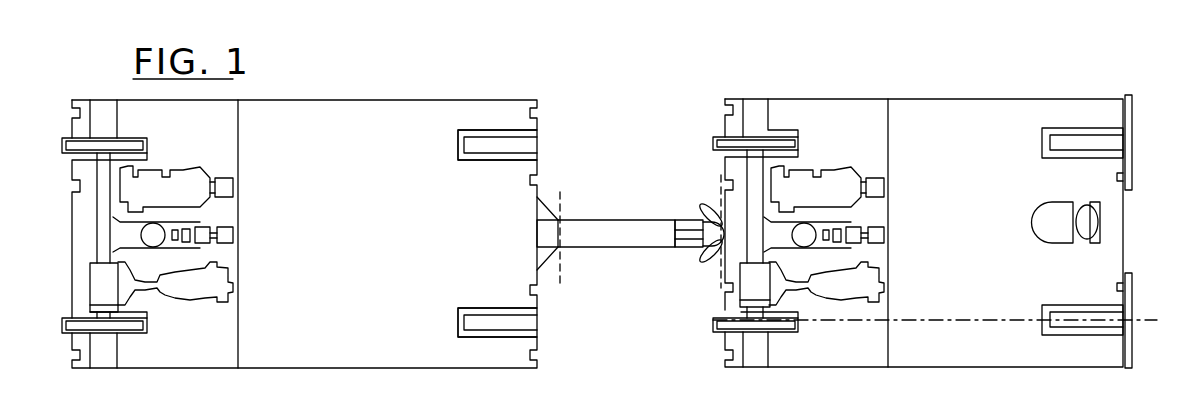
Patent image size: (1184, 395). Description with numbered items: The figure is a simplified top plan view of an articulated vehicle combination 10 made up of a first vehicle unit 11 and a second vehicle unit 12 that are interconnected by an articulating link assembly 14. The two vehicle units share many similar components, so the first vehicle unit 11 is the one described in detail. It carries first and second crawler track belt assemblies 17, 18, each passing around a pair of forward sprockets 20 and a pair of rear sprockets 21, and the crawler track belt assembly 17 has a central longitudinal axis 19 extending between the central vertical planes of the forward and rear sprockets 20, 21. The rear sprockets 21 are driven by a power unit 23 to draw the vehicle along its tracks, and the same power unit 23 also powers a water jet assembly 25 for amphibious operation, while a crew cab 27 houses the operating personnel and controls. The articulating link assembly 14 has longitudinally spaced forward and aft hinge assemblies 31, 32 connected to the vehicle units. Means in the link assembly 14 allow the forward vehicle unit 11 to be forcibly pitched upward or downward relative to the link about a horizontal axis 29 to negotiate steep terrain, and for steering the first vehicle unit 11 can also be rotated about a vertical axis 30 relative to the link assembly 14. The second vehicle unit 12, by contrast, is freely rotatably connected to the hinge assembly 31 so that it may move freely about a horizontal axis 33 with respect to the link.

The articulated vehicle combination 10 is at (677, 84).
The first vehicle unit 11 is at (995, 92).
The second vehicle unit 12 is at (413, 92).
The articulating link assembly 14 is at (647, 242).
The first crawler track belt assembly 17 is at (1133, 360).
The second crawler track belt assembly 18 is at (1132, 163).
The central longitudinal axis 19 is at (941, 319).
The forward sprockets 20 is at (1062, 140).
The rear sprockets 21 is at (712, 137).
The power unit 23 is at (883, 284).
The water jet assembly 25 is at (886, 185).
The crew cab 27 is at (1103, 245).
The horizontal axis 29 is at (718, 280).
The vertical axis 30 is at (697, 249).
The forward hinge assembly 31 is at (716, 200).
The aft hinge assembly 32 is at (544, 205).
The horizontal axis 33 is at (562, 276).